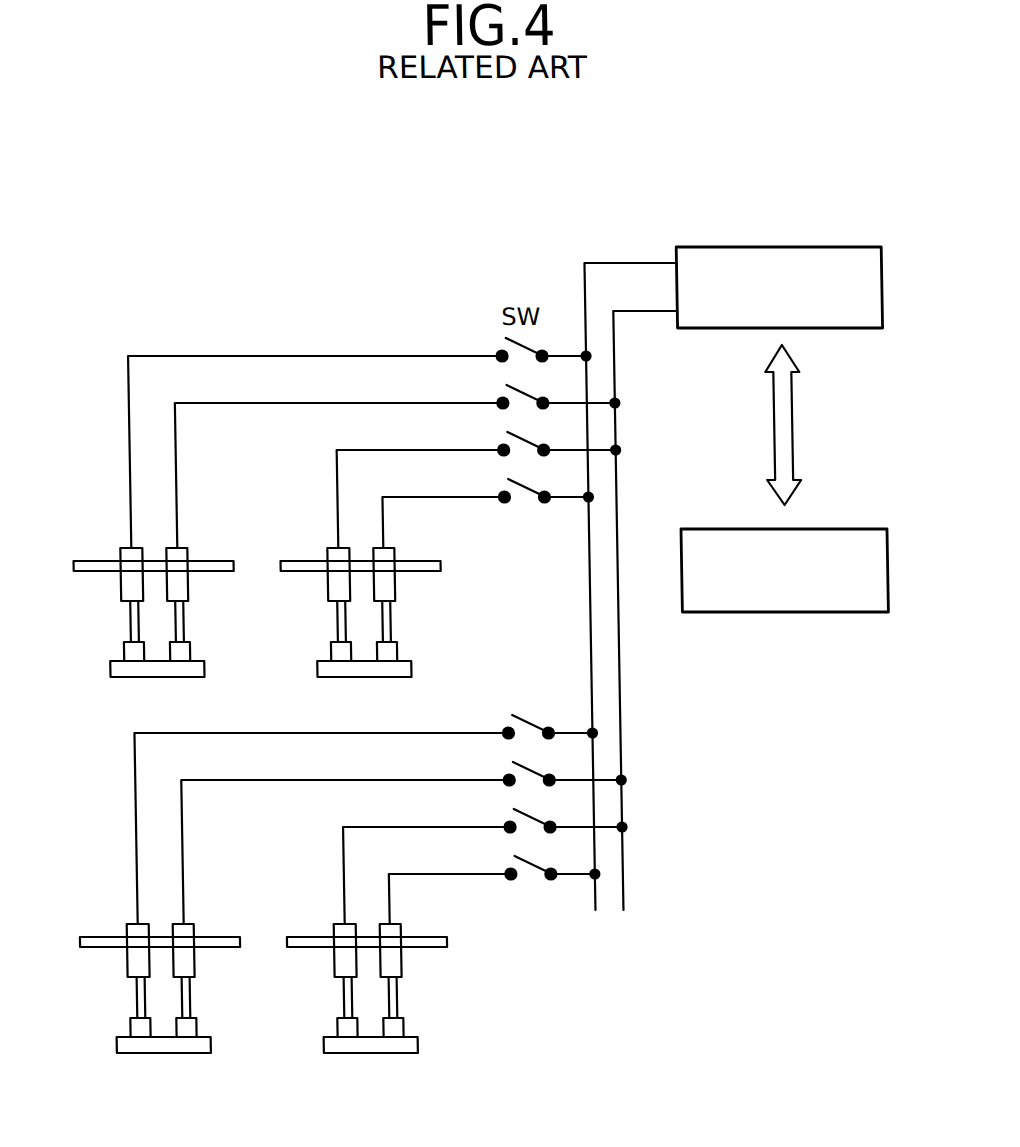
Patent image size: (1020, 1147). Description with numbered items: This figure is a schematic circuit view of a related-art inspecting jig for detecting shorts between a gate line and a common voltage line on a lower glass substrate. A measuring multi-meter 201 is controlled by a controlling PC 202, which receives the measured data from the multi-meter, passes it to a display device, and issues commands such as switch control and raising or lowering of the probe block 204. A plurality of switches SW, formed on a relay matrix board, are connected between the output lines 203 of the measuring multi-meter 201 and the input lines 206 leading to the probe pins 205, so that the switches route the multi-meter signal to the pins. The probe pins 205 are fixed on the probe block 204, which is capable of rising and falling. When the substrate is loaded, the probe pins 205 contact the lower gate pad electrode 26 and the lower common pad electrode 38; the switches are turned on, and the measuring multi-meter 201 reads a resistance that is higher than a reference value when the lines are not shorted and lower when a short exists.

The measuring multi-meter 201 is at (830, 247).
The controlling PC 202 is at (825, 529).
The output lines 203 is at (614, 263).
The probe block 204 is at (93, 561).
The probe pins 205 is at (116, 601).
The input lines 206 is at (336, 356).
The lower gate pad electrode 26 is at (168, 1053).
The lower common pad electrode 38 is at (373, 1053).